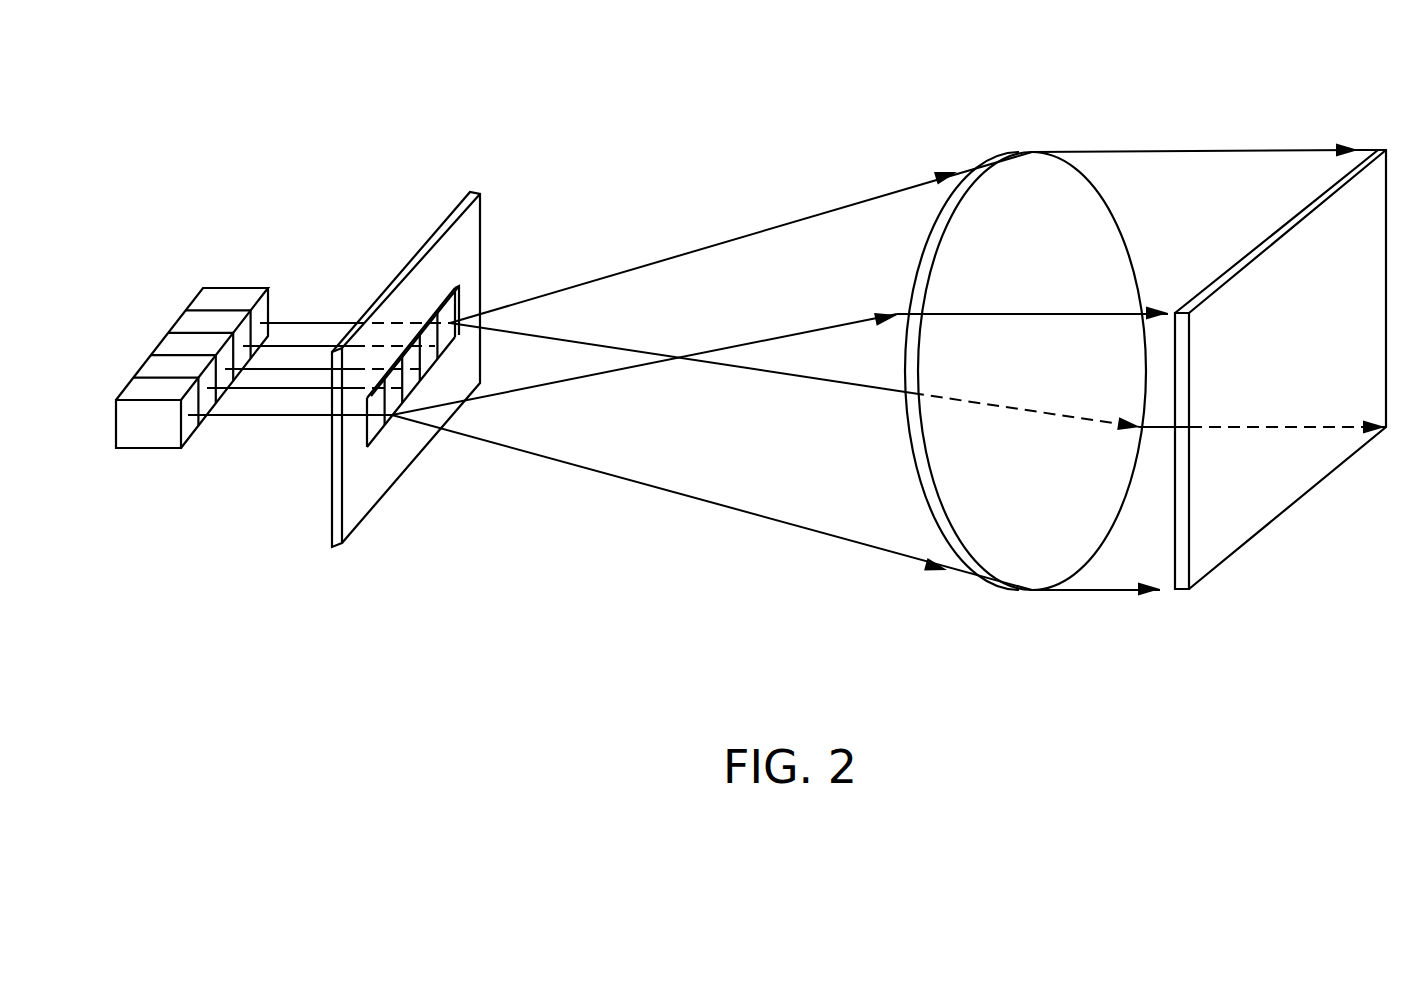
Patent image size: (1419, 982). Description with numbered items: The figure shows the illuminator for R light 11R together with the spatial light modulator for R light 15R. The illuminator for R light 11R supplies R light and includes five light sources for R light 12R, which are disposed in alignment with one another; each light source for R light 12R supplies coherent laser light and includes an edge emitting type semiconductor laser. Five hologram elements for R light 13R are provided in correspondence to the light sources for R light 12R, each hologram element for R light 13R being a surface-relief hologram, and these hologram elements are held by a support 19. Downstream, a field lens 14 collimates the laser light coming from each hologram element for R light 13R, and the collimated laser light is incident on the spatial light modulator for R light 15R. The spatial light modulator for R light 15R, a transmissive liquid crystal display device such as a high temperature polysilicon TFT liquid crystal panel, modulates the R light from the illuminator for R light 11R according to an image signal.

The illuminator for R light 11R is at (364, 110).
The light source for R light 12R is at (225, 302).
The hologram element for R light 13R is at (452, 310).
The support 19 is at (370, 502).
The field lens 14 is at (1028, 180).
The spatial light modulator for R light 15R is at (1378, 149).